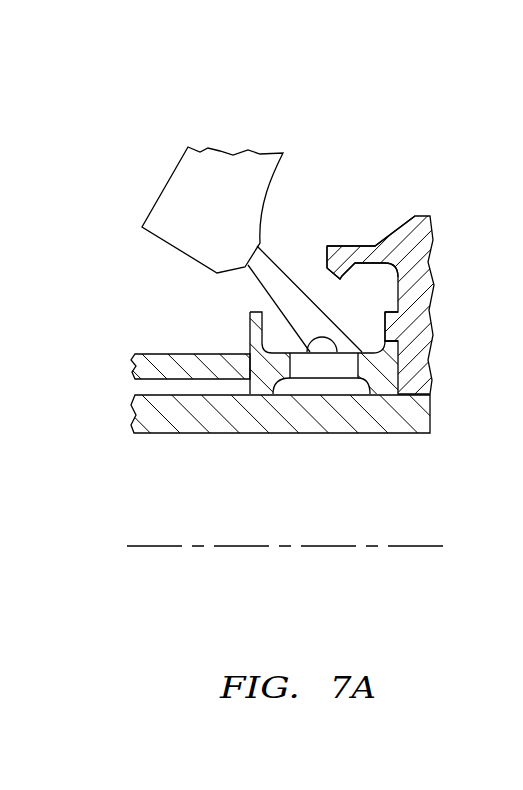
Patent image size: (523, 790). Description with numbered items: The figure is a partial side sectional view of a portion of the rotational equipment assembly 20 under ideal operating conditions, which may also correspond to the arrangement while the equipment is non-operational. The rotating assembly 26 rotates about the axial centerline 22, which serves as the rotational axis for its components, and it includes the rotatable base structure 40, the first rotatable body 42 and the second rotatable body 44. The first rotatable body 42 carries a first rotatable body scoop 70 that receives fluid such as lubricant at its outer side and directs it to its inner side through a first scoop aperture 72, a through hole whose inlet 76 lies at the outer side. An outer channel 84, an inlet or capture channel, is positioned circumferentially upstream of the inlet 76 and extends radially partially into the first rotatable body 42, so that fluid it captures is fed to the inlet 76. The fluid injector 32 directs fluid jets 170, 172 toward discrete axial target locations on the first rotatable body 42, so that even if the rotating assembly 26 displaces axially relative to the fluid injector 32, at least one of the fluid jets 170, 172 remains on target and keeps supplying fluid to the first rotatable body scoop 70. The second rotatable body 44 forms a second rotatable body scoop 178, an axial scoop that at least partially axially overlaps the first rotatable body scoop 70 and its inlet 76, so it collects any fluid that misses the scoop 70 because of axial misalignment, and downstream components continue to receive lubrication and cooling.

The rotational equipment assembly 20 is at (174, 121).
The axial centerline 22 is at (435, 548).
The rotating assembly 26 is at (127, 412).
The fluid injector 32 is at (273, 140).
The rotatable base structure 40 is at (421, 418).
The first rotatable body 42 is at (131, 367).
The second rotatable body 44 is at (433, 352).
The first rotatable body scoop 70 is at (324, 409).
The first scoop aperture 72 is at (312, 378).
The first scoop aperture inlet 76 is at (337, 356).
The outer channel 84 is at (368, 329).
The first fluid jet 170 is at (265, 288).
The second fluid jet 172 is at (294, 281).
The second rotatable body scoop 178 is at (372, 268).